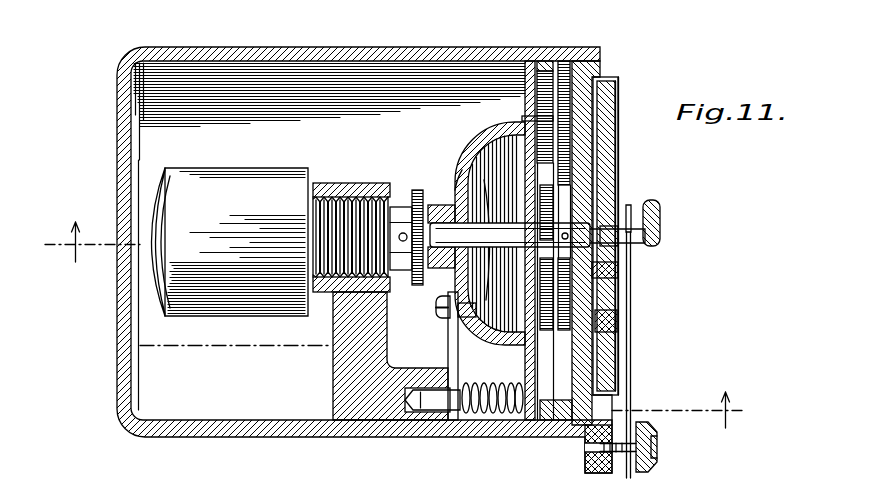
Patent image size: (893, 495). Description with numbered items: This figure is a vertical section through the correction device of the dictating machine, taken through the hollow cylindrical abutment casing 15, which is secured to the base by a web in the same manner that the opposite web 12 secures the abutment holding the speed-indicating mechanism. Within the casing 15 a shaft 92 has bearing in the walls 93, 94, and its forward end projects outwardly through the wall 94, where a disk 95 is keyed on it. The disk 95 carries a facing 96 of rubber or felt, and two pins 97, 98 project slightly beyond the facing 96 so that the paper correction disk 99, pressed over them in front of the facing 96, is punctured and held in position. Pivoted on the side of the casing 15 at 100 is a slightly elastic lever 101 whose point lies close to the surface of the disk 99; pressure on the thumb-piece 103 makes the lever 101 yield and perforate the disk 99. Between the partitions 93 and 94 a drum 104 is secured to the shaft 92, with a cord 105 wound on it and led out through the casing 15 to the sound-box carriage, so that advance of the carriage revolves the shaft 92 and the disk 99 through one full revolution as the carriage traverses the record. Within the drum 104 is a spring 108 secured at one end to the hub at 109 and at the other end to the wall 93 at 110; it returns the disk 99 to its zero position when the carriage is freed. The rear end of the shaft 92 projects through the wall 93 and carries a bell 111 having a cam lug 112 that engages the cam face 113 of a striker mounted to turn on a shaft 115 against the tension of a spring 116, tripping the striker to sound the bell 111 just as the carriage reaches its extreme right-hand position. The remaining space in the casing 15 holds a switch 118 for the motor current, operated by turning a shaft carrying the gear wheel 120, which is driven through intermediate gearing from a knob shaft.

The web 12 is at (395, 325).
The abutment casing 15 is at (278, 52).
The shaft 92 is at (462, 163).
The wall 93 is at (526, 100).
The wall 94 is at (598, 63).
The disk 95 is at (572, 423).
The facing 96 is at (613, 78).
The pin 97 is at (630, 205).
The pin 98 is at (612, 272).
The correction disk 99 is at (613, 128).
The pivot 100 is at (657, 446).
The lever 101 is at (632, 364).
The thumb-piece 103 is at (660, 217).
The drum 104 is at (550, 62).
The cord 105 is at (535, 60).
The spring 108 is at (612, 320).
The hub 109 is at (536, 236).
The spring attachment point 110 is at (522, 118).
The bell 111 is at (456, 168).
The cam lug 112 is at (448, 343).
The cam face 113 is at (450, 353).
The shaft 115 is at (433, 404).
The spring 116 is at (526, 388).
The switch 118 is at (215, 186).
The gear wheel 120 is at (418, 202).